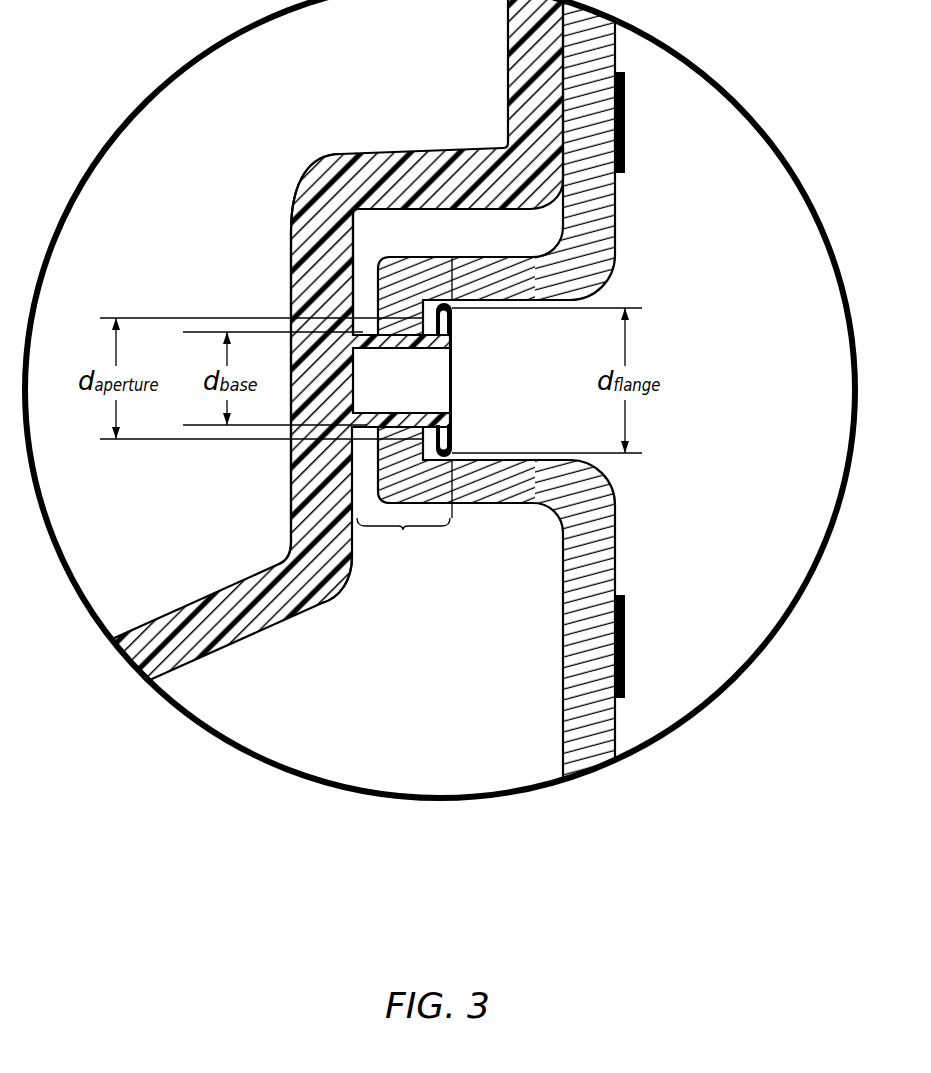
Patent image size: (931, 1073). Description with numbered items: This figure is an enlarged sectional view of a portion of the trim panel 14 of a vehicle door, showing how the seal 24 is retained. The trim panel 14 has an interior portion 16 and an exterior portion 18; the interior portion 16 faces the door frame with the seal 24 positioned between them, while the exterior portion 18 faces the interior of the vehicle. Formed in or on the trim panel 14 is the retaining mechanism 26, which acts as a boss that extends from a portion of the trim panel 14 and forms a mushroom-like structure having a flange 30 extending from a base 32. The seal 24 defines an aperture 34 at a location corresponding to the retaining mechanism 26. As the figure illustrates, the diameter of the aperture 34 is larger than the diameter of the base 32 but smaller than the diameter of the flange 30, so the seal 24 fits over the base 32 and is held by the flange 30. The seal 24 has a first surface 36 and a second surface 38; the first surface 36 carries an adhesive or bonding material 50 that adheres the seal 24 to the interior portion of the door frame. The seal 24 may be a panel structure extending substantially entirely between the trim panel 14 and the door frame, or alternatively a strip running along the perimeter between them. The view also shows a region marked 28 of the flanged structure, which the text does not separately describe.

The trim panel 14 is at (316, 140).
The interior portion 16 is at (341, 589).
The exterior portion 18 is at (290, 486).
The seal 24 is at (535, 652).
The retaining mechanism 26 is at (481, 378).
The flange base 28 is at (404, 409).
The flange 30 is at (455, 322).
The base 32 is at (292, 527).
The aperture 34 is at (381, 328).
The first surface 36 is at (350, 287).
The second surface 38 is at (291, 232).
The adhesive material 50 is at (626, 138).